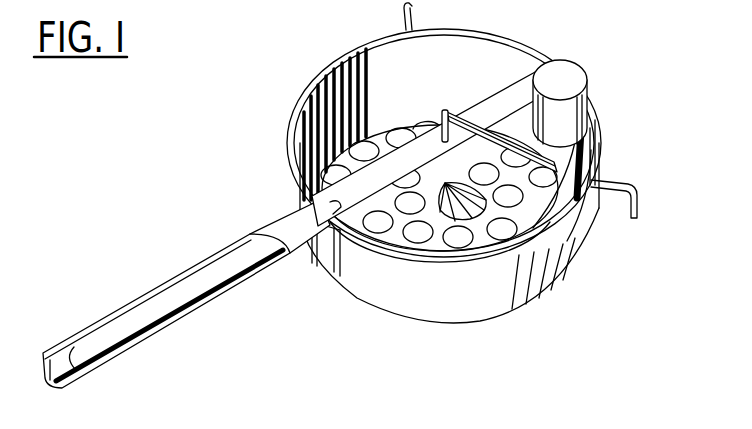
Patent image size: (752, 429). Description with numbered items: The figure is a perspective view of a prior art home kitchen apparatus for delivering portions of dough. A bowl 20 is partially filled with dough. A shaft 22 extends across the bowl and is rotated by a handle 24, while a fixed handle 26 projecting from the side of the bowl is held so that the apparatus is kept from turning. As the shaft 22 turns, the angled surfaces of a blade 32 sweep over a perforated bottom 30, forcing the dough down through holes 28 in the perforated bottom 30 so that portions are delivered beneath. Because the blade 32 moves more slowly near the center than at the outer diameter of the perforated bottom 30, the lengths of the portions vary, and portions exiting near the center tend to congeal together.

The bowl 20 is at (495, 72).
The shaft 22 is at (442, 115).
The handle 24 is at (588, 133).
The fixed handle 26 is at (153, 298).
The holes 28 is at (413, 240).
The perforated bottom 30 is at (480, 243).
The blade 32 is at (548, 200).